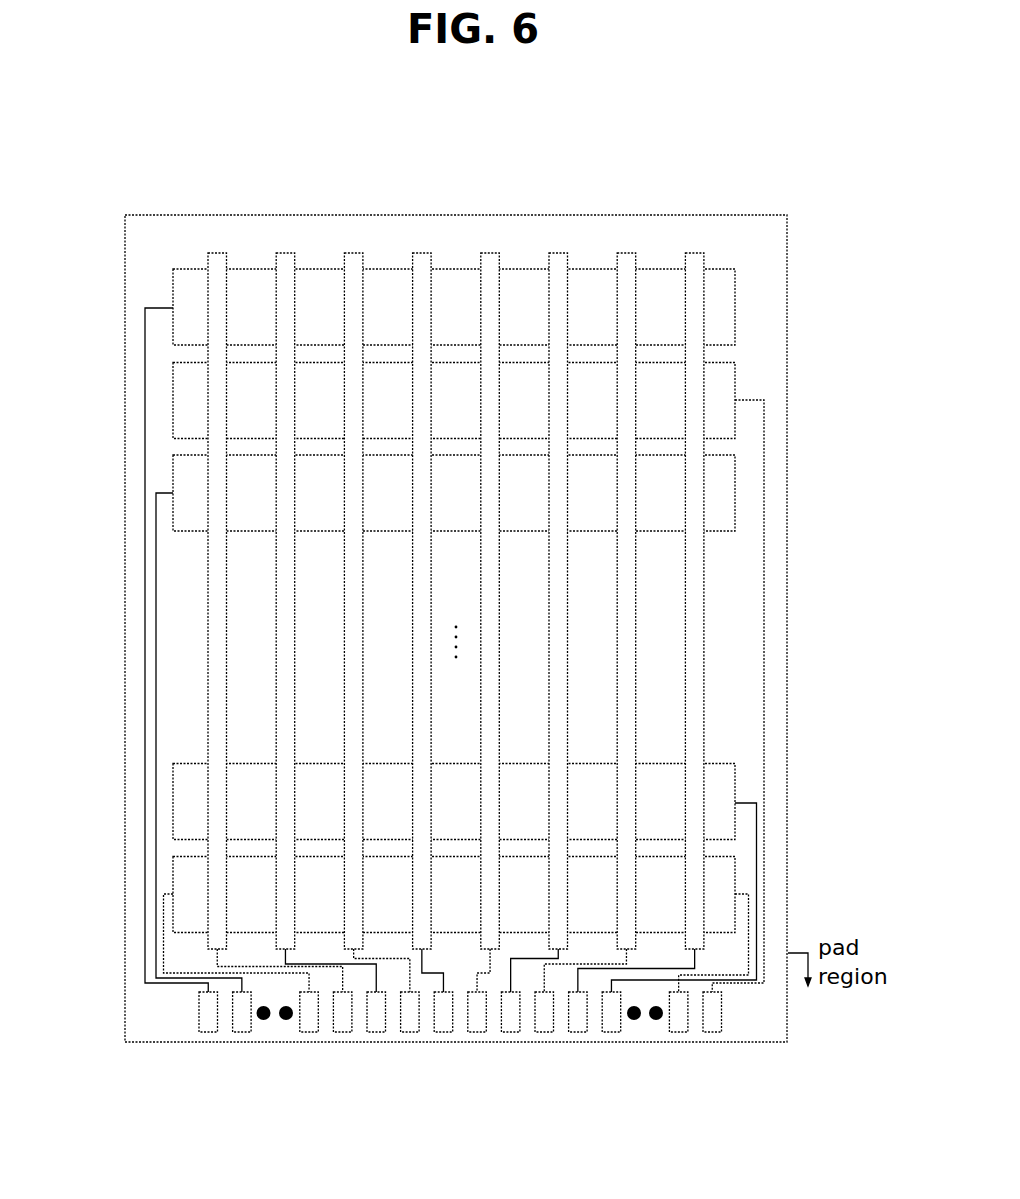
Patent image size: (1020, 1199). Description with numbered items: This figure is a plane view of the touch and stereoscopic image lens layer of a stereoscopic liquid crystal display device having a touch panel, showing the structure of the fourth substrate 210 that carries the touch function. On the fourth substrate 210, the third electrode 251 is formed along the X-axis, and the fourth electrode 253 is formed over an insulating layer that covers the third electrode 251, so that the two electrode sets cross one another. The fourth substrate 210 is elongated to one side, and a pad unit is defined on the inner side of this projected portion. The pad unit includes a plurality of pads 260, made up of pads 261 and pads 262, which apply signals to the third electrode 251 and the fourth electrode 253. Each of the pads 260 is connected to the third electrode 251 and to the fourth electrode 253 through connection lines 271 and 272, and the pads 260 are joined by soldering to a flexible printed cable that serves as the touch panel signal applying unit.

The fourth substrate 210 is at (768, 1015).
The third electrode 251 is at (735, 305).
The fourth electrode 253 is at (693, 252).
The pads 260 is at (460, 1073).
The pads 261 is at (308, 1033).
The pads 262 is at (460, 1046).
The connection lines 271 is at (145, 958).
The connection lines 272 is at (488, 962).